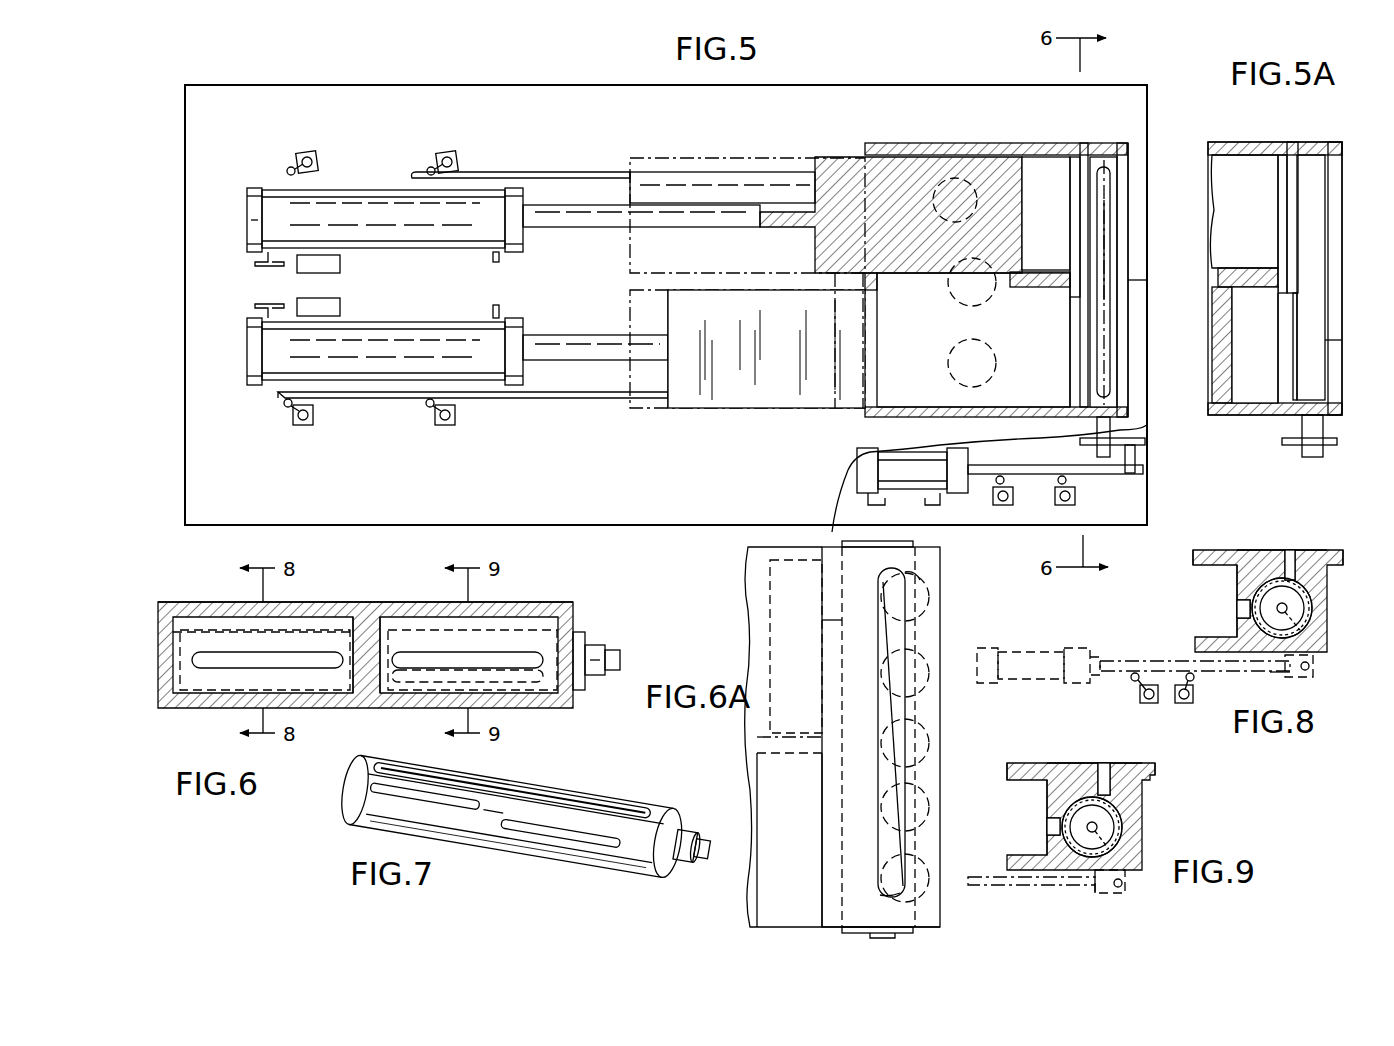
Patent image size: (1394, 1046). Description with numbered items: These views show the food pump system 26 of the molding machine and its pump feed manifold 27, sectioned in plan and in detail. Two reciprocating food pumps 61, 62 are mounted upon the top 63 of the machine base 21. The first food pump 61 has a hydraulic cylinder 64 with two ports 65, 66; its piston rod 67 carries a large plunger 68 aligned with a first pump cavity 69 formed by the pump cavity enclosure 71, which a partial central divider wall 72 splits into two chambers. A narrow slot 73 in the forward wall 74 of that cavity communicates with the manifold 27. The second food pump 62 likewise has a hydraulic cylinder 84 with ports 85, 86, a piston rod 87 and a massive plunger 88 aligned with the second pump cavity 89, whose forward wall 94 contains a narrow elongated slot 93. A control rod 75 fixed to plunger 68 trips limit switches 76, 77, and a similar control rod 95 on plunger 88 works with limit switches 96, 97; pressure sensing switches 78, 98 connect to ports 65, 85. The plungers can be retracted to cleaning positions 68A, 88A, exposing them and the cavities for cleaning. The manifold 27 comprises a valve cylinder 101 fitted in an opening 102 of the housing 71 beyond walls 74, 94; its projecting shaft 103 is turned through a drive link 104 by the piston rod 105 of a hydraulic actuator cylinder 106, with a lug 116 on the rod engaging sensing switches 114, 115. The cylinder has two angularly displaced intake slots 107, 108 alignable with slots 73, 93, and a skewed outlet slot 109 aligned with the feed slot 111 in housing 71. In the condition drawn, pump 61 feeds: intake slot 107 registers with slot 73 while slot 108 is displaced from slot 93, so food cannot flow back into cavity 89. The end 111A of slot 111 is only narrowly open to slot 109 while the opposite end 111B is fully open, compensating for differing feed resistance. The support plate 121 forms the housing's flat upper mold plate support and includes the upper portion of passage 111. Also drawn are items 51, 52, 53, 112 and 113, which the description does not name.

In FIG. 5, the machine base 21 is at (185, 455).
In FIG. 5, the food pump system 26 is at (818, 108).
In FIG. 5, the pump feed manifold 27 is at (1126, 140).
In FIG. 5A, the pump feed manifold 27 is at (1305, 138).
In FIG. 6, the pump feed manifold 27 is at (345, 718).
In FIG. 7, the pump feed manifold 27 is at (488, 825).
In FIG. 6A, the pump feed manifold 27 is at (940, 645).
In FIG. 8, the pump feed manifold 27 is at (1330, 625).
In FIG. 9, the pump feed manifold 27 is at (1148, 815).
In FIG. 5, the lower pin 51 is at (950, 375).
In FIG. 5, the middle pin 52 is at (950, 292).
In FIG. 5, the upper pin 53 is at (975, 172).
In FIG. 5, the first food pump 61 is at (606, 205).
In FIG. 5, the second food pump 62 is at (605, 360).
In FIG. 5, the top of machine base 63 is at (660, 525).
In FIG. 5, the hydraulic cylinder 64 is at (372, 195).
In FIG. 5, the port 65 is at (272, 272).
In FIG. 5, the port 66 is at (500, 258).
In FIG. 5, the piston rod 67 is at (584, 228).
In FIG. 5, the plunger 68 is at (848, 168).
In FIG. 6A, the plunger 68 is at (772, 660).
In FIG. 5, the cleaning position 68A is at (738, 158).
In FIG. 5, the first pump cavity 69 is at (1040, 165).
In FIG. 5A, the first pump cavity 69 is at (1258, 230).
In FIG. 6A, the first pump cavity 69 is at (797, 565).
In FIG. 8, the first pump cavity 69 is at (1225, 585).
In FIG. 5, the pump cavity enclosure 71 is at (942, 143).
In FIG. 5A, the pump cavity enclosure 71 is at (1238, 142).
In FIG. 6, the pump cavity enclosure 71 is at (225, 602).
In FIG. 6A, the pump cavity enclosure 71 is at (799, 868).
In FIG. 8, the pump cavity enclosure 71 is at (1256, 550).
In FIG. 9, the pump cavity enclosure 71 is at (1080, 763).
In FIG. 5, the partial central divider wall 72 is at (1032, 288).
In FIG. 5A, the partial central divider wall 72 is at (1258, 282).
In FIG. 5, the slot 73 is at (1073, 220).
In FIG. 5A, the slot 73 is at (1280, 192).
In FIG. 6, the slot 73 is at (318, 650).
In FIG. 8, the slot 73 is at (1238, 608).
In FIG. 5, the forward wall 74 is at (1084, 150).
In FIG. 5A, the forward wall 74 is at (1292, 142).
In FIG. 6, the forward wall 74 is at (200, 680).
In FIG. 8, the forward wall 74 is at (1210, 578).
In FIG. 5, the control rod 75 is at (532, 172).
In FIG. 5, the limit switch 76 is at (454, 153).
In FIG. 5, the limit switch 77 is at (316, 153).
In FIG. 5, the pressure sensing switch 78 is at (340, 264).
In FIG. 5, the hydraulic cylinder 84 is at (418, 322).
In FIG. 5, the port 85 is at (272, 299).
In FIG. 5, the port 86 is at (497, 315).
In FIG. 5, the piston rod 87 is at (578, 335).
In FIG. 5, the plunger 88 is at (740, 395).
In FIG. 5A, the plunger 88 is at (1218, 368).
In FIG. 5, the cleaning position 88A is at (655, 410).
In FIG. 5, the second pump cavity 89 is at (918, 352).
In FIG. 5A, the second pump cavity 89 is at (1264, 372).
In FIG. 6A, the second pump cavity 89 is at (795, 765).
In FIG. 9, the second pump cavity 89 is at (1030, 808).
In FIG. 5, the slot 93 is at (1070, 352).
In FIG. 5A, the slot 93 is at (1280, 326).
In FIG. 6, the slot 93 is at (440, 648).
In FIG. 9, the slot 93 is at (1045, 826).
In FIG. 5, the forward wall 94 is at (1072, 400).
In FIG. 5A, the forward wall 94 is at (1292, 412).
In FIG. 6, the forward wall 94 is at (525, 622).
In FIG. 9, the forward wall 94 is at (1030, 788).
In FIG. 5, the control rod 95 is at (515, 398).
In FIG. 5, the limit switch 96 is at (445, 425).
In FIG. 5, the limit switch 97 is at (300, 425).
In FIG. 5, the pressure sensing switch 98 is at (340, 306).
In FIG. 5, the manifold valve cylinder 101 is at (1114, 140).
In FIG. 5A, the manifold valve cylinder 101 is at (1333, 143).
In FIG. 6, the manifold valve cylinder 101 is at (582, 632).
In FIG. 7, the manifold valve cylinder 101 is at (478, 856).
In FIG. 6A, the manifold valve cylinder 101 is at (920, 545).
In FIG. 8, the manifold valve cylinder 101 is at (1325, 625).
In FIG. 9, the manifold valve cylinder 101 is at (1120, 832).
In FIG. 5, the opening 102 is at (1130, 288).
In FIG. 5A, the opening 102 is at (1330, 354).
In FIG. 5, the shaft 103 is at (1112, 437).
In FIG. 5A, the shaft 103 is at (1325, 438).
In FIG. 6, the shaft 103 is at (596, 676).
In FIG. 7, the shaft 103 is at (693, 819).
In FIG. 5, the drive link 104 is at (1140, 448).
In FIG. 8, the drive link 104 is at (1310, 678).
In FIG. 9, the drive link 104 is at (1126, 886).
In FIG. 5, the piston rod 105 is at (1124, 475).
In FIG. 8, the piston rod 105 is at (1265, 674).
In FIG. 9, the piston rod 105 is at (1088, 892).
In FIG. 5, the hydraulic actuator cylinder 106 is at (858, 470).
In FIG. 8, the hydraulic actuator cylinder 106 is at (1048, 648).
In FIG. 5, the intake slot 107 is at (1090, 247).
In FIG. 6, the intake slot 107 is at (192, 660).
In FIG. 7, the intake slot 107 is at (370, 827).
In FIG. 8, the intake slot 107 is at (1252, 600).
In FIG. 5A, the intake slot 108 is at (1298, 328).
In FIG. 6, the intake slot 108 is at (535, 682).
In FIG. 7, the intake slot 108 is at (553, 874).
In FIG. 9, the intake slot 108 is at (1065, 870).
In FIG. 7, the outlet slot 109 is at (514, 778).
In FIG. 6A, the outlet slot 109 is at (842, 620).
In FIG. 8, the outlet slot 109 is at (1312, 592).
In FIG. 9, the outlet slot 109 is at (1122, 802).
In FIG. 5, the slot 111 is at (1112, 232).
In FIG. 6A, the slot 111 is at (900, 705).
In FIG. 8, the slot 111 is at (1292, 555).
In FIG. 9, the slot 111 is at (1105, 763).
In FIG. 6A, the end of slot 111A is at (895, 600).
In FIG. 6A, the opposite end of slot 111B is at (900, 890).
In FIG. 5, the cylinder mounting feet 112 is at (940, 505).
In FIG. 5, the enclosure outline 113 is at (832, 520).
In FIG. 5, the sensing switch 114 is at (1070, 505).
In FIG. 8, the sensing switch 114 is at (1188, 703).
In FIG. 5, the sensing switch 115 is at (1010, 503).
In FIG. 8, the sensing switch 115 is at (1138, 694).
In FIG. 5, the lug 116 is at (1062, 470).
In FIG. 8, the lug 116 is at (1185, 670).
In FIG. 6, the support plate 121 is at (385, 604).
In FIG. 8, the support plate 121 is at (1340, 560).
In FIG. 9, the support plate 121 is at (1148, 768).